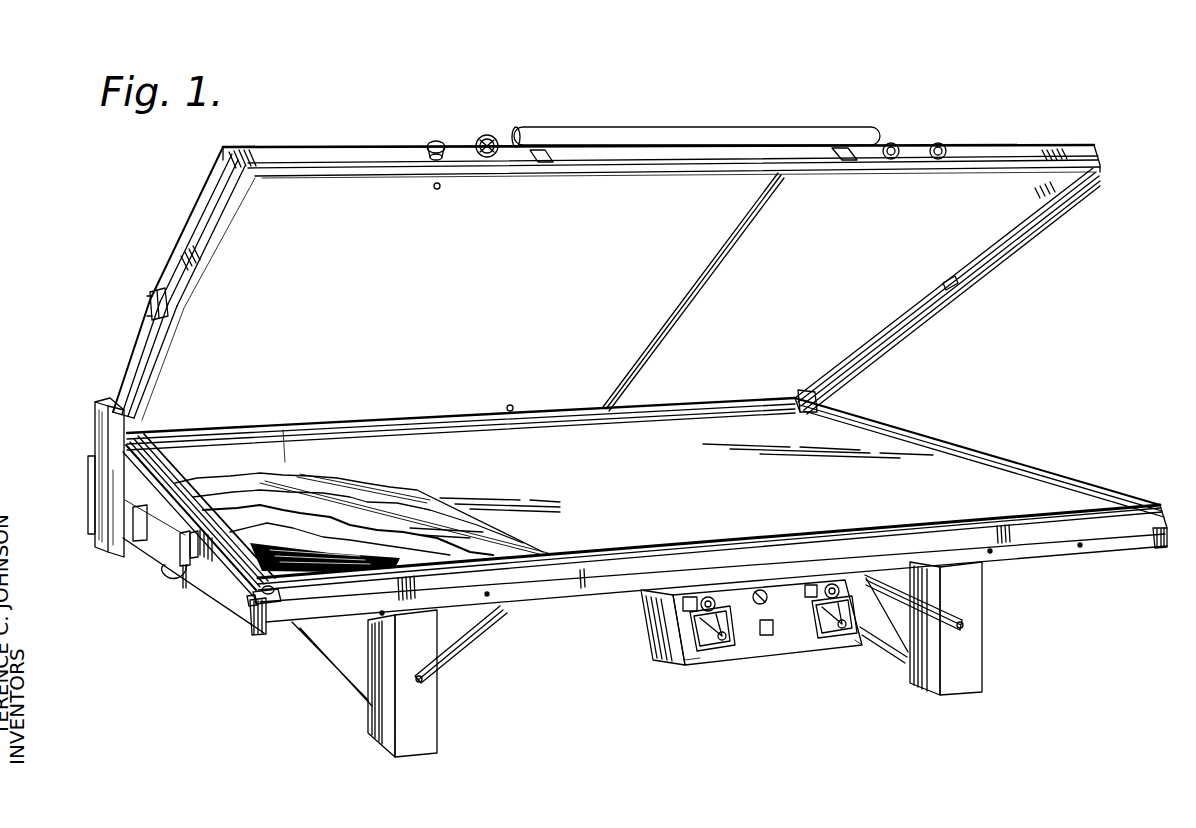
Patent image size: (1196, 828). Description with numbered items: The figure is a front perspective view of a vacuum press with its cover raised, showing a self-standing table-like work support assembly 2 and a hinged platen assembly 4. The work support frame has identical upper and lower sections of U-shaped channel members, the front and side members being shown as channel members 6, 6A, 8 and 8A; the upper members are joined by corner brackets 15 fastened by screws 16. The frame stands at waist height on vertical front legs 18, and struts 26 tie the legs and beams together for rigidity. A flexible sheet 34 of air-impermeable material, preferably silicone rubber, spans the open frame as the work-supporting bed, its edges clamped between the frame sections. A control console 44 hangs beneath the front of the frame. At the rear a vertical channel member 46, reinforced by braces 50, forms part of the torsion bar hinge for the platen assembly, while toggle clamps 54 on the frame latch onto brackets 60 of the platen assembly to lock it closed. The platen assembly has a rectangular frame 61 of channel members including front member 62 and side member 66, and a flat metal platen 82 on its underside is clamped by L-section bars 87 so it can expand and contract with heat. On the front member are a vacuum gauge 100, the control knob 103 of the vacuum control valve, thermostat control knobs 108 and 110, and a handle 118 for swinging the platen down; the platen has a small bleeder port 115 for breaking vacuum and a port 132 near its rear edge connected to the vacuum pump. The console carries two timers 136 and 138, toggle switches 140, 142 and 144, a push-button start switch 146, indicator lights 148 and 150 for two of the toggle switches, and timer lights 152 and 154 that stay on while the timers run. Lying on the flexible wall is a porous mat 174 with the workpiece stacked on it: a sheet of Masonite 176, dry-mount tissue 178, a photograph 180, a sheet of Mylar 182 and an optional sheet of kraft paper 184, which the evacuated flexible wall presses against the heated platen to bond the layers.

The work support assembly 2 is at (618, 527).
The platen assembly 4 is at (594, 263).
The channel member 6 is at (298, 617).
The channel member 6A is at (323, 595).
The channel member 8 is at (215, 575).
The channel member 8A is at (250, 580).
The corner bracket 15 is at (266, 594).
The screws 16 is at (263, 630).
The front legs 18 is at (425, 712).
The struts 26 is at (470, 637).
The flexible sheet 34 is at (172, 525).
The control console 44 is at (740, 593).
The channel member 46 is at (90, 517).
The braces 50 is at (113, 553).
The toggle clamps 54 is at (183, 560).
The brackets 60 is at (148, 300).
The frame 61 is at (142, 362).
The channel member 62 is at (402, 153).
The channel member 66 is at (213, 198).
The platen 82 is at (563, 278).
The bars 87 is at (334, 170).
The vacuum gauge 100 is at (489, 133).
The control knob 103 is at (434, 140).
The control knob 108 is at (893, 144).
The control knob 110 is at (943, 147).
The bleeder port 115 is at (440, 189).
The handle 118 is at (685, 133).
The port 132 is at (513, 406).
The timer 136 is at (705, 640).
The timer 138 is at (825, 627).
The toggle switch 140 is at (680, 597).
The toggle switch 142 is at (808, 583).
The toggle switch 144 is at (773, 637).
The push-button start switch 146 is at (757, 588).
The indicator light 148 is at (705, 595).
The indicator light 150 is at (832, 582).
The light 152 is at (730, 650).
The light 154 is at (848, 640).
The porous mat 174 is at (297, 550).
The sheet of Masonite 176 is at (317, 523).
The sheet of dry-mount tissue 178 is at (337, 507).
The photograph 180 is at (352, 490).
The sheet of Mylar 182 is at (383, 492).
The sheet of kraft paper 184 is at (285, 460).